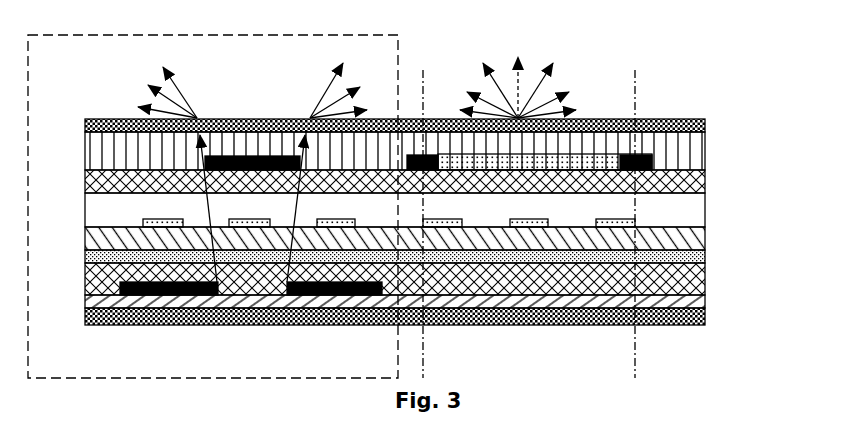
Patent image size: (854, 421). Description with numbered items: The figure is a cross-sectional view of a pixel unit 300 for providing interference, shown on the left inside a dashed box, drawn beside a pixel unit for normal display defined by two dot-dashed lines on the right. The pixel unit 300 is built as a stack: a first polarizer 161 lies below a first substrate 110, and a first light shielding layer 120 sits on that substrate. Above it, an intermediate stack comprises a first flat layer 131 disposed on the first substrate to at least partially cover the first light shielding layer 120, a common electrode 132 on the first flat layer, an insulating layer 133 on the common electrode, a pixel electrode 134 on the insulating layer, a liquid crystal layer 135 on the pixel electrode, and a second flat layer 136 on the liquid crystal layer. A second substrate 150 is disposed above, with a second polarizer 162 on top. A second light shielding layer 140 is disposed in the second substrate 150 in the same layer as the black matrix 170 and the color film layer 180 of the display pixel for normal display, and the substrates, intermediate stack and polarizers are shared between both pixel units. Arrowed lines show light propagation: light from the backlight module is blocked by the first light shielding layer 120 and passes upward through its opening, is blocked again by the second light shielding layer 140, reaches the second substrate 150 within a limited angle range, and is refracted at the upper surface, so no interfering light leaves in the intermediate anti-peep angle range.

The pixel unit 300 is at (113, 75).
The second polarizer 162 is at (705, 119).
The second substrate 150 is at (693, 157).
The second flat layer 136 is at (697, 178).
The liquid crystal layer 135 is at (693, 212).
The pixel electrode 134 is at (143, 220).
The insulating layer 133 is at (702, 235).
The common electrode 132 is at (700, 254).
The first flat layer 131 is at (698, 280).
The first light shielding layer 120 is at (128, 283).
The first substrate 110 is at (702, 304).
The first polarizer 161 is at (705, 316).
The second light shielding layer 140 is at (215, 157).
The black matrix 170 is at (423, 157).
The color film layer 180 is at (548, 160).